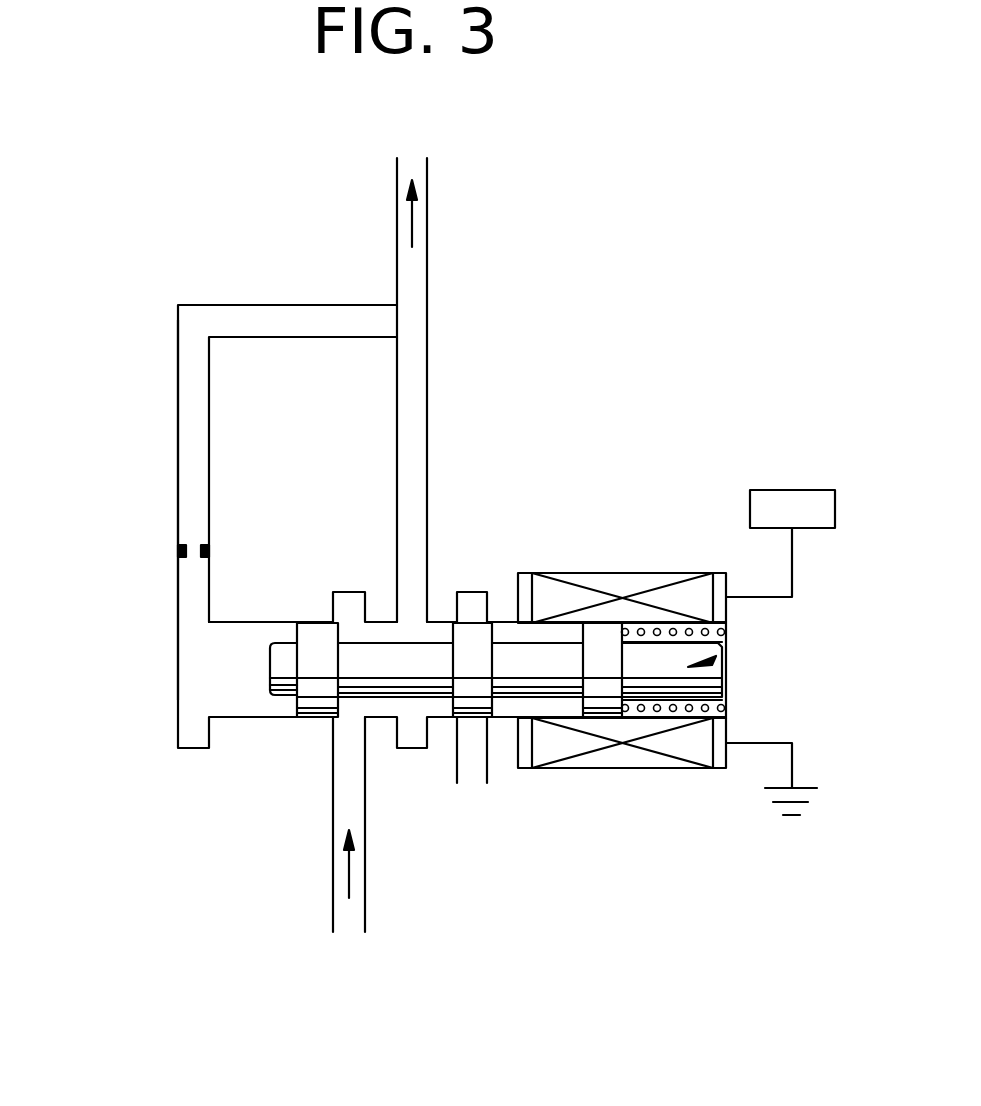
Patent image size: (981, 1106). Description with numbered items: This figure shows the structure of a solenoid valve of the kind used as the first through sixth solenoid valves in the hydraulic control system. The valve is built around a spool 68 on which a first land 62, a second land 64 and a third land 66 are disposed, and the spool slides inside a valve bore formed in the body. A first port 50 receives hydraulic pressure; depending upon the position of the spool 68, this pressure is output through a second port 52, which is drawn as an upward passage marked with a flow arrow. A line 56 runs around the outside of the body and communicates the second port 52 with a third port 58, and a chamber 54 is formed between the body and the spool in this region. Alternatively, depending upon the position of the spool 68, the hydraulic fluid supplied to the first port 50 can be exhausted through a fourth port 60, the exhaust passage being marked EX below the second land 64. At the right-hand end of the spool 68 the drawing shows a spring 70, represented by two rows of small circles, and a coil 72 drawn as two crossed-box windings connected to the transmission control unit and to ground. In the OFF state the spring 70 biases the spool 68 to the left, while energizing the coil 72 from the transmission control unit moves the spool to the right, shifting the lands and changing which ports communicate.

The first port 50 is at (316, 824).
The second port 52 is at (441, 390).
The valve chamber 54 is at (252, 558).
The line 56 is at (124, 510).
The third port 58 is at (405, 526).
The fourth port 60 is at (496, 686).
The first land 62 is at (320, 618).
The second land 64 is at (445, 725).
The third land 66 is at (602, 728).
The spool 68 is at (752, 662).
The spring 70 is at (673, 611).
The coil 72 is at (676, 633).
The exhaust port EX is at (470, 772).